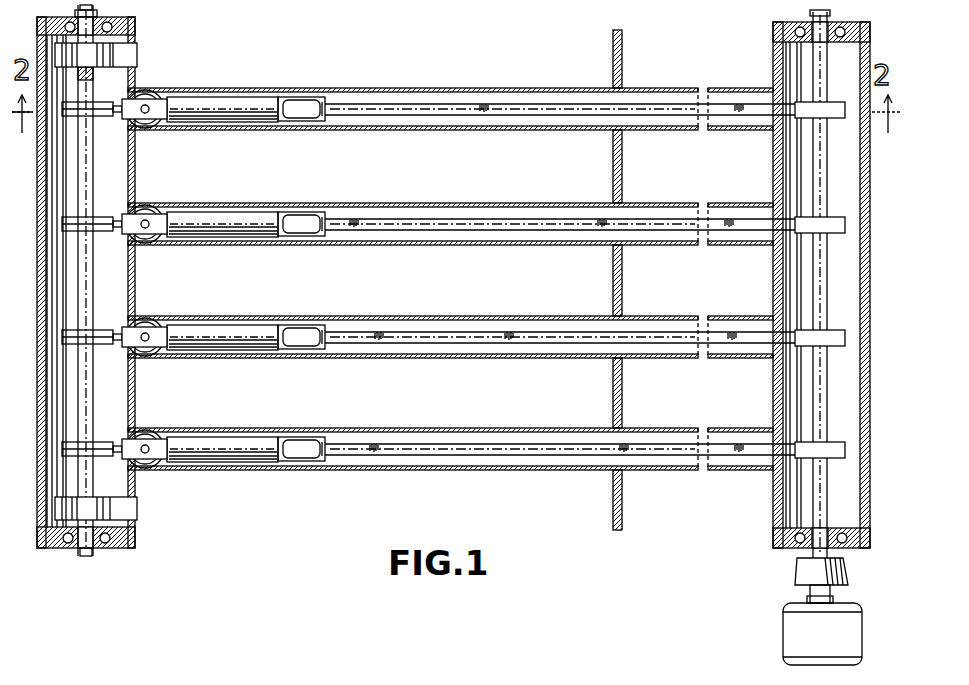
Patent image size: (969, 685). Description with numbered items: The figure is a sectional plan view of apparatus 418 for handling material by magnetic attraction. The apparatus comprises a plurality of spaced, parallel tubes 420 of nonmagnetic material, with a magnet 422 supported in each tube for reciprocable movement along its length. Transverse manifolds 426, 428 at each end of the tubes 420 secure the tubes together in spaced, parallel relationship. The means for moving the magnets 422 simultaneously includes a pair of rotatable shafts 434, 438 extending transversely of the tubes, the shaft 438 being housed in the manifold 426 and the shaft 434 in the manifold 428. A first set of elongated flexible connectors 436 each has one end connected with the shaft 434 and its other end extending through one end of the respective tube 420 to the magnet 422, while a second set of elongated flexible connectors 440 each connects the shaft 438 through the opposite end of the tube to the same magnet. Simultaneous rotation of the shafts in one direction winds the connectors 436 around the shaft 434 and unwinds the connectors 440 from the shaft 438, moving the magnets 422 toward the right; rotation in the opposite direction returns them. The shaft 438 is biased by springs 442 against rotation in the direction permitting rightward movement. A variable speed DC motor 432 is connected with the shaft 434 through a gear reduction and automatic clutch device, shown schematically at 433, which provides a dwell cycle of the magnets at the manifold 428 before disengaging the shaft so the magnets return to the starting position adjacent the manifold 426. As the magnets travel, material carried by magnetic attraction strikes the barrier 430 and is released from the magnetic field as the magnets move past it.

The apparatus for handling material by magnetic attraction 418 is at (432, 80).
The tubes 420 is at (540, 90).
The magnet 422 is at (246, 92).
The manifold 426 is at (137, 540).
The manifold 428 is at (773, 533).
The barrier 430 is at (612, 500).
The motor 432 is at (798, 622).
The automatic clutch and gear reduction 433 is at (808, 572).
The rotatable shaft 434 is at (818, 490).
The first set of elongated flexible connectors 436 is at (512, 116).
The rotatable shaft 438 is at (92, 305).
The second set of elongated flexible connectors 440 is at (122, 118).
The springs 442 is at (137, 58).